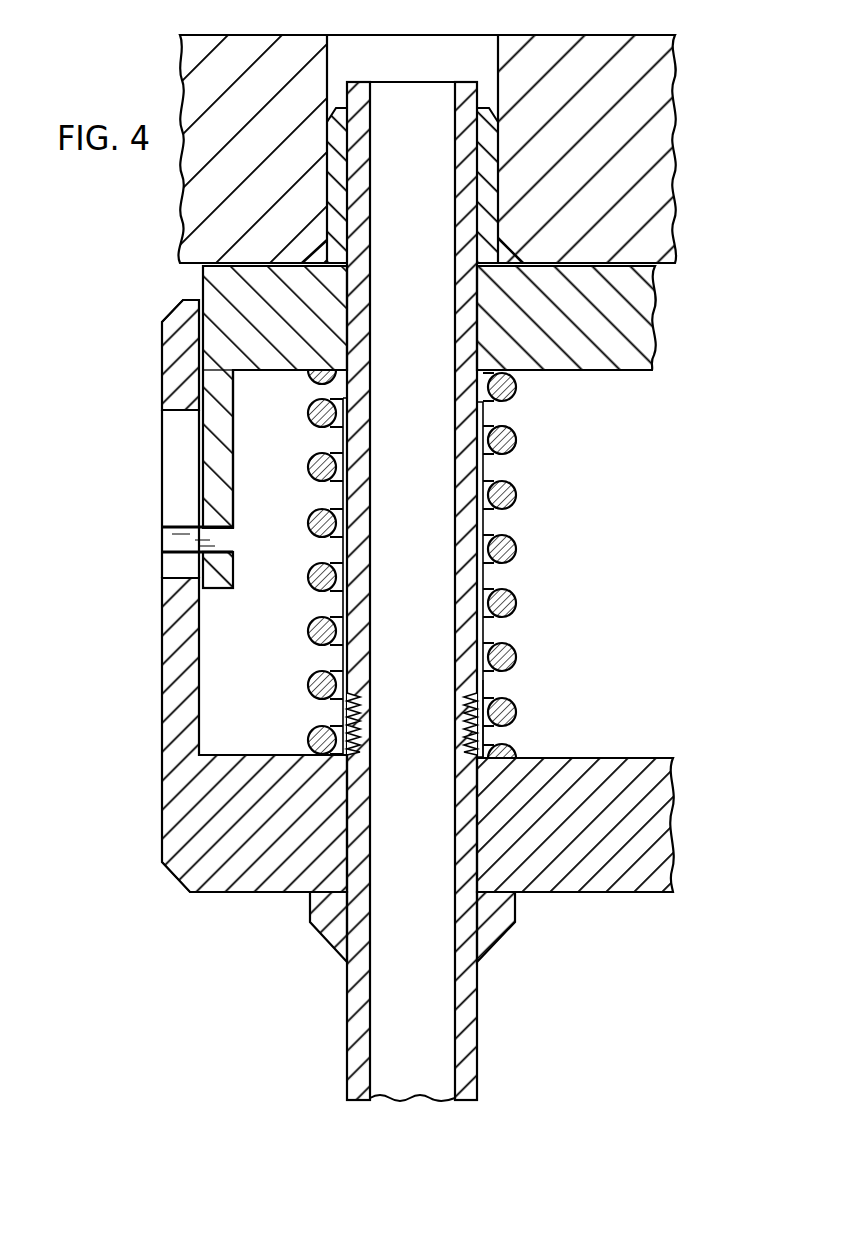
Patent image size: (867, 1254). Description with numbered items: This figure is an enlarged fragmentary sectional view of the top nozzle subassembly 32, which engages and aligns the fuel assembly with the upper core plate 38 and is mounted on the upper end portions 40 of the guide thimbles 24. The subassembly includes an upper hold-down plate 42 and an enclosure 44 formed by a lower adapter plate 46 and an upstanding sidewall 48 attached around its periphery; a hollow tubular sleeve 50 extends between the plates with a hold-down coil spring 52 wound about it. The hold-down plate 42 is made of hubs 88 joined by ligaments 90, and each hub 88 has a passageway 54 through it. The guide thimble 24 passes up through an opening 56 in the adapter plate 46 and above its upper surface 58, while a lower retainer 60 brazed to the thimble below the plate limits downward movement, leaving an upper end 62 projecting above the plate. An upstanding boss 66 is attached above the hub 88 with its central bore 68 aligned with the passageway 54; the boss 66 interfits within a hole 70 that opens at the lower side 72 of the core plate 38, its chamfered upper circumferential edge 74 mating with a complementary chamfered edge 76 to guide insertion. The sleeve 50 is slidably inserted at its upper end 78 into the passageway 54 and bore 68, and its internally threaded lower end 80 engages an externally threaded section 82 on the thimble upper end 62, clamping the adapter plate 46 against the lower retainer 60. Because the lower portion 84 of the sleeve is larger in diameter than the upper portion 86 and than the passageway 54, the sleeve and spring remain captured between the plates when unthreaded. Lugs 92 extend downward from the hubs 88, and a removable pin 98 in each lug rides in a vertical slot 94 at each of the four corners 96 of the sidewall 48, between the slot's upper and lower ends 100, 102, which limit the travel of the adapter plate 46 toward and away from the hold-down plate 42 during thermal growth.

The guide thimble 24 is at (480, 1052).
The top nozzle subassembly 32 is at (146, 362).
The upper core plate 38 is at (676, 82).
The upper end portion 40 is at (480, 972).
The upper hold-down plate 42 is at (656, 318).
The enclosure 44 is at (162, 789).
The lower adapter plate 46 is at (660, 820).
The upstanding sidewall 48 is at (162, 680).
The sleeve 50 is at (486, 520).
The hold-down coil spring 52 is at (517, 440).
The passageway 54 is at (470, 312).
The opening 56 is at (370, 810).
The upper surface 58 is at (612, 758).
The lower retainer 60 is at (513, 907).
The upper end 62 is at (452, 828).
The boss 66 is at (497, 162).
The central bore 68 is at (377, 135).
The hole 70 is at (491, 98).
The lower side 72 is at (190, 266).
The upper circumferential edge 74 is at (333, 108).
The chamfered edge 76 is at (337, 268).
The upper end 78 is at (468, 107).
The lower end 80 is at (486, 690).
The externally threaded section 82 is at (462, 718).
The lower portion 84 is at (478, 632).
The upper portion 86 is at (468, 360).
The hub 88 is at (282, 332).
The ligament 90 is at (628, 372).
The lug 92 is at (213, 473).
The vertical slot 94 is at (180, 505).
The corner 96 is at (162, 652).
The pin 98 is at (172, 536).
The upper end 100 is at (190, 412).
The lower end 102 is at (193, 572).